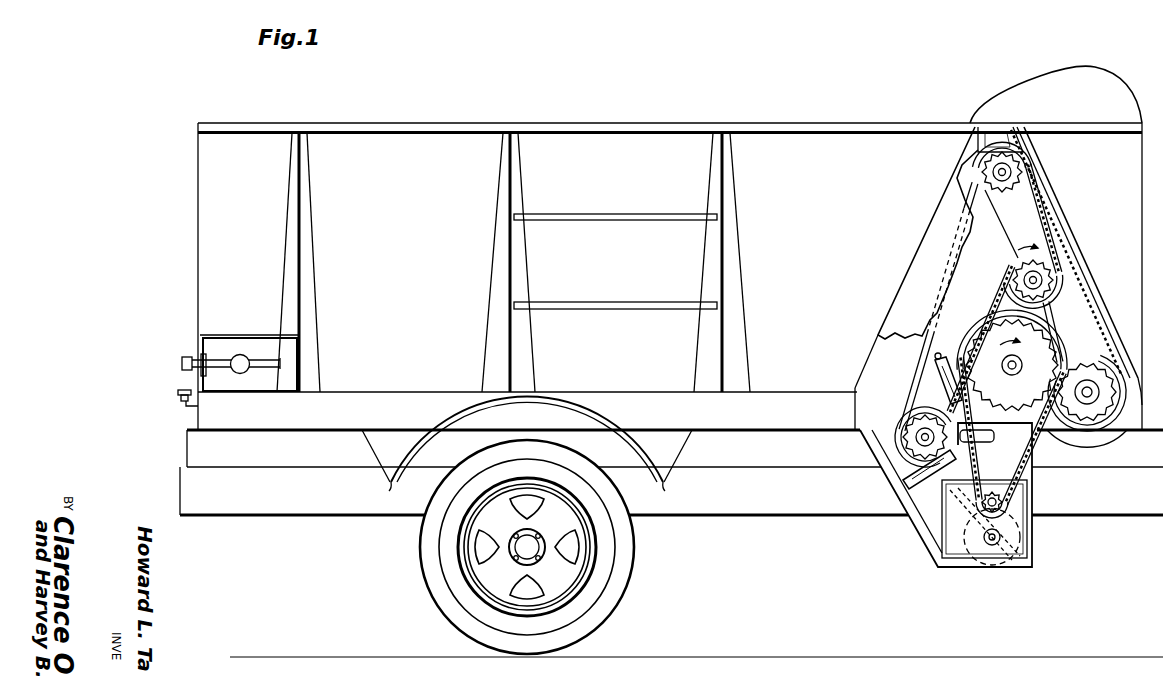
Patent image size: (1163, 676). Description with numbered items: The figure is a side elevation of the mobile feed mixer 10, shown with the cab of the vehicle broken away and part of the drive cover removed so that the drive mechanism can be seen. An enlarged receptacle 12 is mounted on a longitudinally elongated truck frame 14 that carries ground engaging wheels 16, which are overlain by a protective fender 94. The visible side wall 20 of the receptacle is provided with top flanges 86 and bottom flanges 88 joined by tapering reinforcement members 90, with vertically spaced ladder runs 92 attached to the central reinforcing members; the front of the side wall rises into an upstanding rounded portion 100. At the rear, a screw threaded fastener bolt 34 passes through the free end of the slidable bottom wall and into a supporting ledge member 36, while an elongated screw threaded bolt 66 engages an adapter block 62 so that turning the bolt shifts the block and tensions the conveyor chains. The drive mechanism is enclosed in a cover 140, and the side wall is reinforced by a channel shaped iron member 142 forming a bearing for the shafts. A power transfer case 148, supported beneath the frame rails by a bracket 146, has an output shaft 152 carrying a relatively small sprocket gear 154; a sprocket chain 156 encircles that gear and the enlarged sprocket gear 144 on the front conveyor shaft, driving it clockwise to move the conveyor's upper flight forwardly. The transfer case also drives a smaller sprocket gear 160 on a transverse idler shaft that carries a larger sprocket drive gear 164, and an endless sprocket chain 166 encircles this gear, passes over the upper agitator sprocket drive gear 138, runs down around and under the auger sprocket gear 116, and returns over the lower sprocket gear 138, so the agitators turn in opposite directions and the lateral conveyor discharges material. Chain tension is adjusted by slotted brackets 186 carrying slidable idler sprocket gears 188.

The mobile feed mixer 10 is at (183, 181).
The receptacle 12 is at (863, 134).
The truck frame 14 is at (828, 514).
The ground engaging wheels 16 is at (614, 595).
The side wall 20 is at (784, 138).
The fastener bolt 34 is at (179, 398).
The supporting ledge member 36 is at (190, 408).
The adapter block 62 is at (243, 373).
The screw threaded bolt 66 is at (222, 366).
The top flanges 86 is at (308, 248).
The bottom flanges 88 is at (362, 395).
The tapering reinforcement members 90 is at (300, 246).
The ladder runs 92 is at (624, 221).
The fender 94 is at (580, 400).
The upstanding rounded portions 100 is at (1080, 74).
The sprocket gear 116 is at (1100, 408).
The sprocket drive gears 138 is at (1025, 172).
The cover 140 is at (1089, 280).
The channel shaped iron member 142 is at (1040, 213).
The enlarged sprocket gear 144 is at (1035, 410).
The supporting bracket 146 is at (925, 548).
The power transfer case 148 is at (960, 572).
The output shaft 152 is at (1004, 553).
The sprocket gear 154 is at (994, 490).
The sprocket chain 156 is at (1032, 452).
The smaller sprocket gear 160 is at (882, 478).
The larger sprocket drive gear 164 is at (907, 402).
The endless sprocket chain 166 is at (1114, 312).
The brackets 186 is at (906, 516).
The idler sprocket gears 188 is at (942, 335).